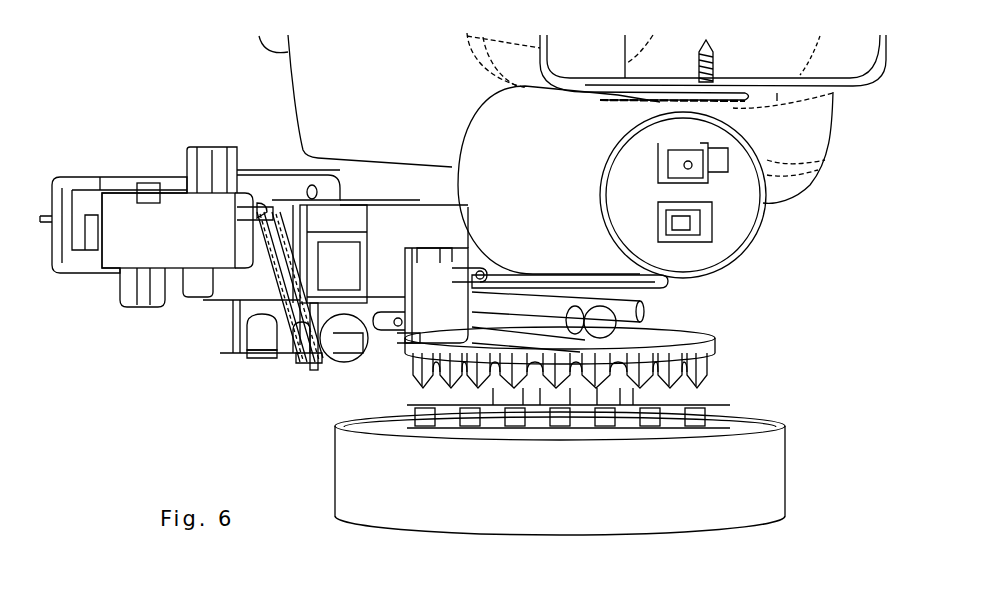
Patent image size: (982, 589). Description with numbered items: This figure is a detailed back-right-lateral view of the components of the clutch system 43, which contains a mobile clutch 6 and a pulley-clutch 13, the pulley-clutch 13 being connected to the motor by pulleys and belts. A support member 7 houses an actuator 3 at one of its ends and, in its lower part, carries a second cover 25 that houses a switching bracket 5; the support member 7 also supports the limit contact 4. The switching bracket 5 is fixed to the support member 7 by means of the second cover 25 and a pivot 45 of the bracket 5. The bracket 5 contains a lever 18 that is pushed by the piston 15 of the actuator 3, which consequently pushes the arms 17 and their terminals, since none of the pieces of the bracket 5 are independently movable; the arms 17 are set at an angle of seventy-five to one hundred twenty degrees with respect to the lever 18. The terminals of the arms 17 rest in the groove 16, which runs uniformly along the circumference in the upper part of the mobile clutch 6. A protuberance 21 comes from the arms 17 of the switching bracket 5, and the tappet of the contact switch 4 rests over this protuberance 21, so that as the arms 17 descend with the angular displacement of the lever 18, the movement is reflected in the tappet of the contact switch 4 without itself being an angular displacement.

The actuator 3 is at (175, 248).
The limit contact 4 is at (408, 295).
The switching bracket 5 is at (252, 365).
The mobile clutch 6 is at (703, 359).
The support member 7 is at (96, 248).
The pulley-clutch 13 is at (761, 472).
The piston 15 is at (250, 246).
The groove 16 is at (663, 283).
The arms 17 is at (488, 338).
The lever 18 is at (279, 300).
The protuberance 21 is at (613, 320).
The second cover 25 is at (305, 362).
The clutch system 43 is at (227, 428).
The pivot 45 is at (334, 349).